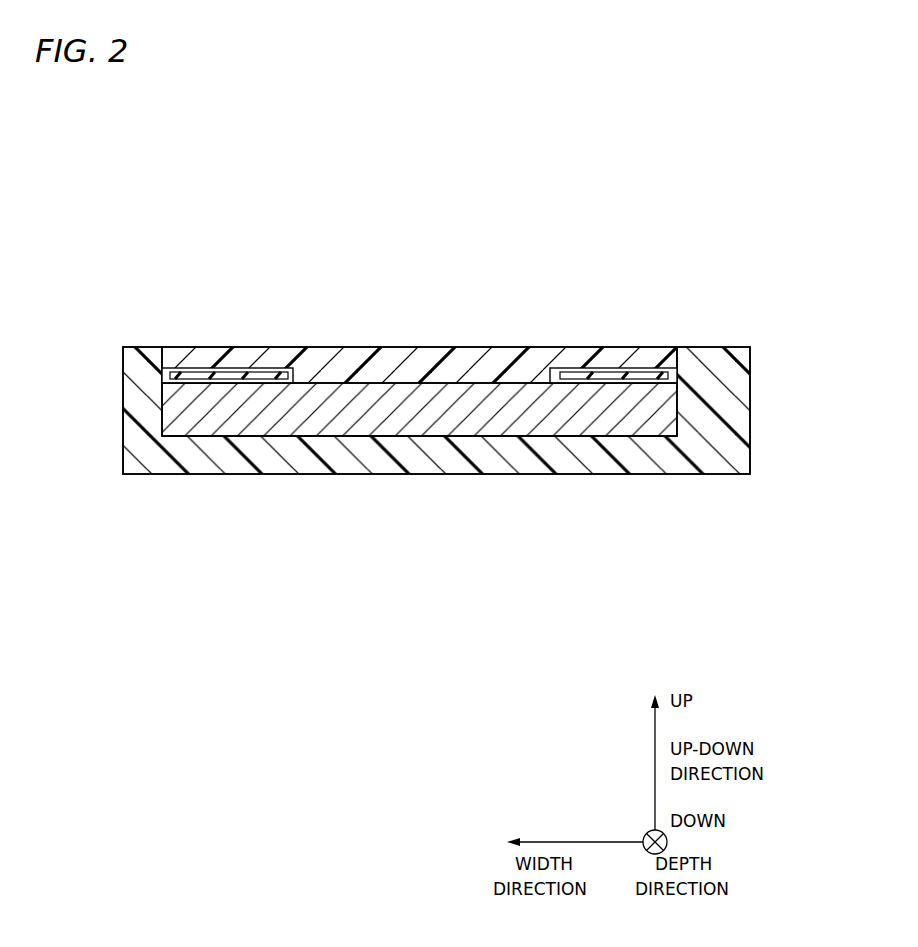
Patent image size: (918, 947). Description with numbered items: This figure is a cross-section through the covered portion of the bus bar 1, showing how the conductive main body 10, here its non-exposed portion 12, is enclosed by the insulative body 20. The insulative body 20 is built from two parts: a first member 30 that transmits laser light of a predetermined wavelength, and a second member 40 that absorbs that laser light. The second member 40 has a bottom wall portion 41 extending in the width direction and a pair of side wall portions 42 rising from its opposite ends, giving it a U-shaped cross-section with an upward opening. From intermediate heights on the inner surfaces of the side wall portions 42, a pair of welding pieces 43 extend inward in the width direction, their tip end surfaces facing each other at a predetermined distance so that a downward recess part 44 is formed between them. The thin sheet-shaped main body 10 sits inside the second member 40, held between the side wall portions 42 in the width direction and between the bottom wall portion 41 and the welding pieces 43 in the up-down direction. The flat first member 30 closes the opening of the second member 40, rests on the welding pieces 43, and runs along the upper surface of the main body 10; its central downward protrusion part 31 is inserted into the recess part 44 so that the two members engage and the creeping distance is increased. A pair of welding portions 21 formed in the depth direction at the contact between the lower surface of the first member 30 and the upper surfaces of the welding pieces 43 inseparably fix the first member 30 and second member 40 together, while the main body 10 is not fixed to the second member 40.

The bus bar 1 is at (630, 152).
The main body 10 is at (313, 400).
The non-exposed portion 12 is at (419, 292).
The insulative body 20 is at (695, 197).
The welding portions 21 is at (197, 368).
The first member 30 is at (510, 336).
The protrusion part 31 is at (417, 378).
The second member 40 is at (434, 375).
The bottom wall portion 41 is at (458, 474).
The side wall portions 42 is at (123, 412).
The welding pieces 43 is at (218, 383).
The recess part 44 is at (368, 436).